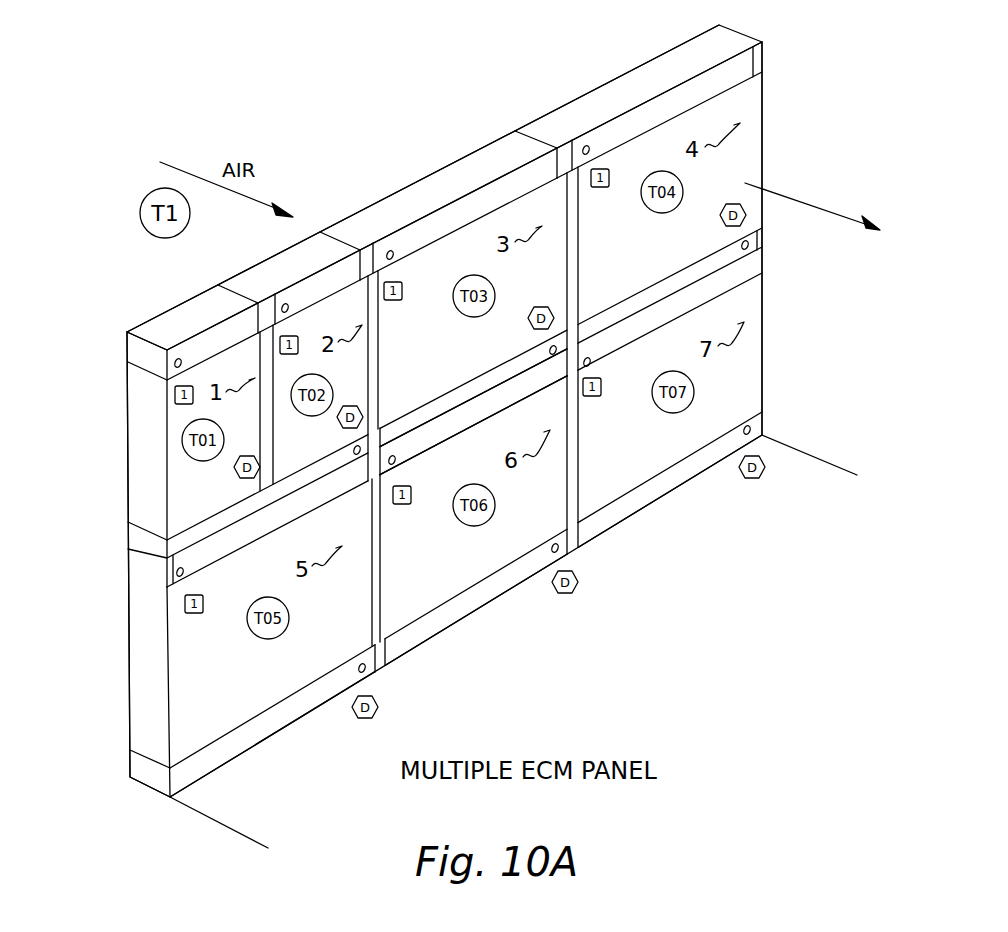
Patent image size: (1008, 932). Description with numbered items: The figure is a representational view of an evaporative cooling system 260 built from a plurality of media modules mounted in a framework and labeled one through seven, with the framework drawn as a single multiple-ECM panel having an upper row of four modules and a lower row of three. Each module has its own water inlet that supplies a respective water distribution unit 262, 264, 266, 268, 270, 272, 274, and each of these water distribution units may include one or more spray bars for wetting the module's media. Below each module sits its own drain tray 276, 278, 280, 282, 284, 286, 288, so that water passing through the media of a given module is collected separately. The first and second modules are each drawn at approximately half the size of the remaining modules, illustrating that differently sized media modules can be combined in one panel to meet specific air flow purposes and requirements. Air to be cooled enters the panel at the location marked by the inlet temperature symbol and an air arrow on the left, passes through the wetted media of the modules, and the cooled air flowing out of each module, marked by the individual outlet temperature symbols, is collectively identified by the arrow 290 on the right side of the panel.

The evaporative cooling system 260 is at (752, 642).
The water distribution unit 262 is at (173, 311).
The water distribution unit 264 is at (300, 247).
The water distribution unit 266 is at (458, 168).
The water distribution unit 268 is at (637, 80).
The water distribution unit 270 is at (145, 566).
The water distribution unit 272 is at (532, 383).
The water distribution unit 274 is at (732, 272).
The drain tray 276 is at (135, 533).
The drain tray 278 is at (313, 470).
The drain tray 280 is at (476, 393).
The drain tray 282 is at (675, 278).
The drain tray 284 is at (278, 723).
The drain tray 286 is at (462, 605).
The drain tray 288 is at (675, 482).
The arrow 290 is at (798, 202).